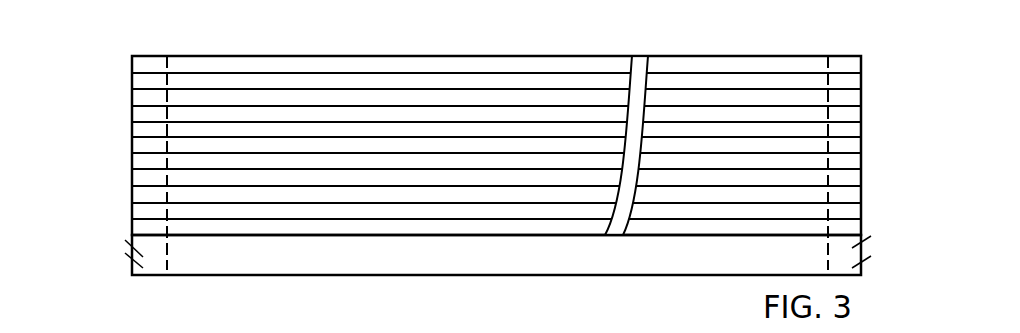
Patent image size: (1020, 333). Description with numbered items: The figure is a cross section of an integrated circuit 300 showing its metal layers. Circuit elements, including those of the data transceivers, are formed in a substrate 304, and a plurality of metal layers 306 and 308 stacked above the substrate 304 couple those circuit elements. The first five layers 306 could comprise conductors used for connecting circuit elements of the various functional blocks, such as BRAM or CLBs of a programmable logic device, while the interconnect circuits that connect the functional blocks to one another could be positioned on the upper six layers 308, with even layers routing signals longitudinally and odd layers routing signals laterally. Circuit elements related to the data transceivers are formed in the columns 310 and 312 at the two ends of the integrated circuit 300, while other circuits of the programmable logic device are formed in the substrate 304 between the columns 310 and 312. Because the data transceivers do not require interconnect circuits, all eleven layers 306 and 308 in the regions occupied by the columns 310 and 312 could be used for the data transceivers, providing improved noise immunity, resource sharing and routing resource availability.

The integrated circuit 300 is at (862, 158).
The substrate 304 is at (862, 233).
The first metal layers 306 is at (128, 156).
The upper metal layers 308 is at (128, 57).
The column 310 is at (149, 56).
The column 312 is at (846, 56).